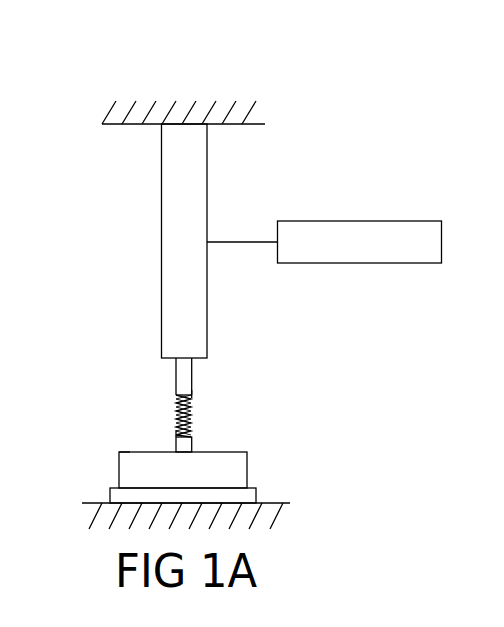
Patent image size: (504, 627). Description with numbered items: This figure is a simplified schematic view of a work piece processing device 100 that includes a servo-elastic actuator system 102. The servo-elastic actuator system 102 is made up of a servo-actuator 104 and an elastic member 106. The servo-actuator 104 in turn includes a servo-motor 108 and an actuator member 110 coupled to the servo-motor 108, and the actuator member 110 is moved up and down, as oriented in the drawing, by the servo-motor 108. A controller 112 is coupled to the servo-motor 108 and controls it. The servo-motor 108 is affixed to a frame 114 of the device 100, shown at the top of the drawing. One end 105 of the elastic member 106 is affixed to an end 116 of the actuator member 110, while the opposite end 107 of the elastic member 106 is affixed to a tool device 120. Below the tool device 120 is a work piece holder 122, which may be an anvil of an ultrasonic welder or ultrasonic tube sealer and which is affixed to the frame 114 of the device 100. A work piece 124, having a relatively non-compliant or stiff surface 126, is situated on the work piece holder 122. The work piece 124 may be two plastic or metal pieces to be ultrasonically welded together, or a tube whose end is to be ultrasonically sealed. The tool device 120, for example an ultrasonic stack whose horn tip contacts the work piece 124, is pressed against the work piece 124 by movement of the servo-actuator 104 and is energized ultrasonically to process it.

The work piece processing device 100 is at (337, 50).
The servo-elastic actuator system 102 is at (397, 138).
The servo-actuator 104 is at (255, 176).
The end of elastic member 105 is at (176, 398).
The elastic member 106 is at (214, 417).
The opposite end of elastic member 107 is at (175, 437).
The servo-motor 108 is at (207, 288).
The actuator member 110 is at (207, 368).
The controller 112 is at (359, 263).
The frame 114 is at (255, 124).
The end of actuator member 116 is at (191, 397).
The tool device 120 is at (192, 446).
The work piece holder 122 is at (256, 497).
The work piece 124 is at (271, 470).
The surface 126 is at (119, 452).